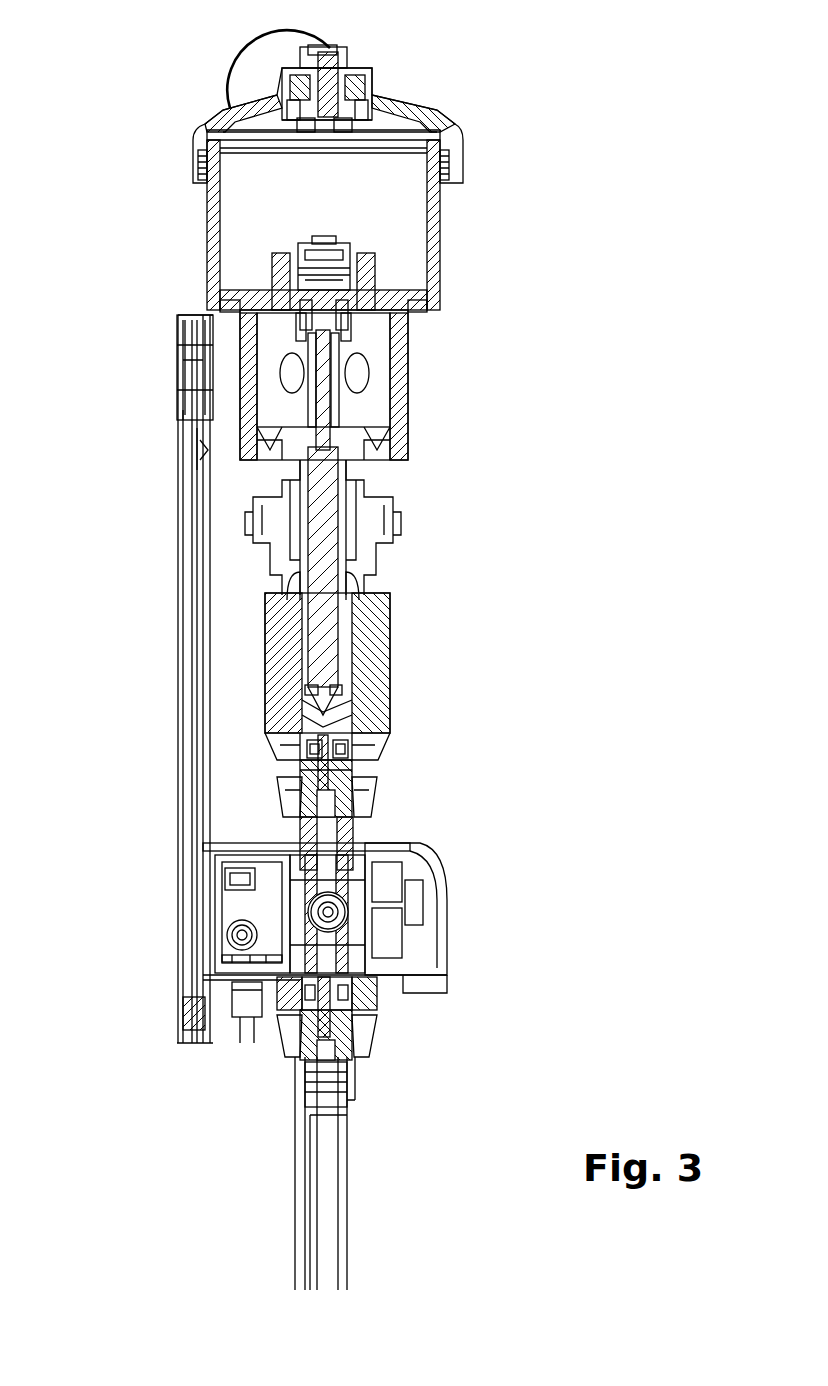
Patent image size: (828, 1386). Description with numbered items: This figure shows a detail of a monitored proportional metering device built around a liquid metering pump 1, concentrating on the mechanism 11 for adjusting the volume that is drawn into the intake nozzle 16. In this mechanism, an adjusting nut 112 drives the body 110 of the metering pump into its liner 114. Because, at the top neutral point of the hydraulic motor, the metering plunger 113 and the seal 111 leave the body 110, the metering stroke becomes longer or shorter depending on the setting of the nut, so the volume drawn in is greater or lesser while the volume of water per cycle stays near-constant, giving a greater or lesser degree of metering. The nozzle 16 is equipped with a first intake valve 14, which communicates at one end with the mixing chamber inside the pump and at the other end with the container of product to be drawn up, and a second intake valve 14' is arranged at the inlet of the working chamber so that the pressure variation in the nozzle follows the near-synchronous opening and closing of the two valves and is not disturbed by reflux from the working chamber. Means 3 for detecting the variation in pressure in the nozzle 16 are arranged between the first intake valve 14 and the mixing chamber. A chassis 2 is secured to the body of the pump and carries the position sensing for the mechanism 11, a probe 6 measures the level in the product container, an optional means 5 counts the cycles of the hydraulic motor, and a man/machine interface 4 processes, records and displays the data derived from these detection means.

The liquid metering pump 1 is at (462, 241).
The chassis 2 is at (167, 617).
The means for detecting the variation in pressure 3 is at (240, 908).
The man/machine interface 4 is at (450, 903).
The means of counting the cycles 5 is at (350, 38).
The probe 6 is at (295, 1217).
The intake-volume adjustment mechanism 11 is at (400, 607).
The first intake valve 14 is at (390, 1018).
The second intake valve 14' is at (238, 764).
The intake nozzle 16 is at (328, 1205).
The body of the metering pump 110 is at (342, 690).
The seal 111 is at (318, 690).
The adjusting nut 112 is at (392, 722).
The metering plunger 113 is at (328, 508).
The liner 114 is at (382, 547).